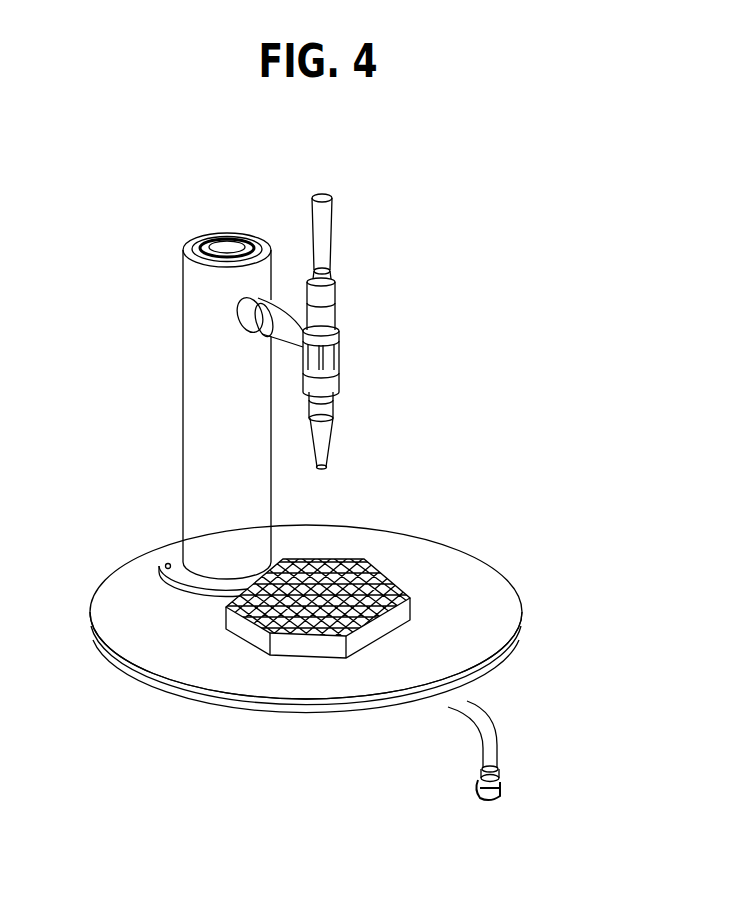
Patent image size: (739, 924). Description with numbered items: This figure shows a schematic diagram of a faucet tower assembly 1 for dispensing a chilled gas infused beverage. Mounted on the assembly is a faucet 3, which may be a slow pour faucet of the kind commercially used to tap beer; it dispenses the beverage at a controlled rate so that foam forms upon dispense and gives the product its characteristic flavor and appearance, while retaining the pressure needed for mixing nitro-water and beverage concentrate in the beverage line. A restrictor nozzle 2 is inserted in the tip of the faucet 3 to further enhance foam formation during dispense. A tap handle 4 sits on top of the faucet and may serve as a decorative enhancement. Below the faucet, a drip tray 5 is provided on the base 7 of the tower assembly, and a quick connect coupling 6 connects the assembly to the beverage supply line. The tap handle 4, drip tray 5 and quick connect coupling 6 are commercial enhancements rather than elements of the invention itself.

The faucet tower assembly 1 is at (183, 275).
The restrictor nozzle 2 is at (336, 428).
The faucet 3 is at (340, 338).
The tap handle 4 is at (336, 200).
The drip tray 5 is at (407, 582).
The quick connect coupling 6 is at (504, 787).
The base 7 is at (113, 680).